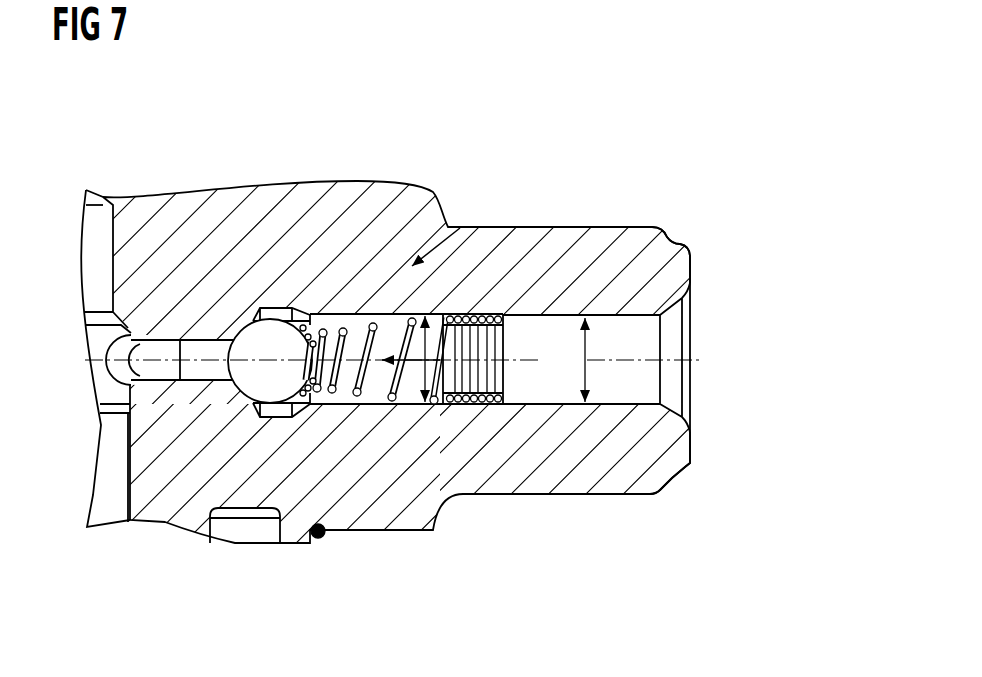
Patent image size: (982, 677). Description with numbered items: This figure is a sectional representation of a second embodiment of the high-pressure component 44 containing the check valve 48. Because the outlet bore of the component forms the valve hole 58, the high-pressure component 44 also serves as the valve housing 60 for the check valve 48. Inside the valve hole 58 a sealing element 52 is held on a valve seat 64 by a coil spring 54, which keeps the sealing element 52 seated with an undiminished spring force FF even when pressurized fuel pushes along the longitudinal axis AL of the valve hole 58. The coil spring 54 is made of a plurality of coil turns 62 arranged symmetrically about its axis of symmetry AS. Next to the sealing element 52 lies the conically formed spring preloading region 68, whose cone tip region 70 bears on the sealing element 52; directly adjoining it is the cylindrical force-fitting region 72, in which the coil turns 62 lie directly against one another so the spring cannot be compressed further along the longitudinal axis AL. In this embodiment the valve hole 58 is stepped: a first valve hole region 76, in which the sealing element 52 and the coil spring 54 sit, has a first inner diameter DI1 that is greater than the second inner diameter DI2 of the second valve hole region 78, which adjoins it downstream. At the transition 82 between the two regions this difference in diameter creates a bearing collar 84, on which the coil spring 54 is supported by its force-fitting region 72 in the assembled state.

The high-pressure component 44 is at (190, 483).
The check valve 48 is at (445, 205).
The sealing element 52 is at (248, 345).
The coil spring 54 is at (410, 358).
The valve hole 58 is at (647, 404).
The valve housing 60 is at (630, 258).
The coil turns 62 is at (393, 406).
The valve seat 64 is at (243, 370).
The spring preloading region 68 is at (352, 312).
The cone tip region 70 is at (319, 312).
The force-fitting region 72 is at (483, 305).
The first valve hole region 76 is at (340, 406).
The second valve hole region 78 is at (607, 405).
The transition 82 is at (510, 302).
The bearing collar 84 is at (523, 406).
The longitudinal axis AL is at (452, 332).
The axis of symmetry AS is at (666, 352).
The spring force FF is at (412, 362).
The first inner diameter DI1 is at (425, 372).
The second inner diameter DI2 is at (566, 360).